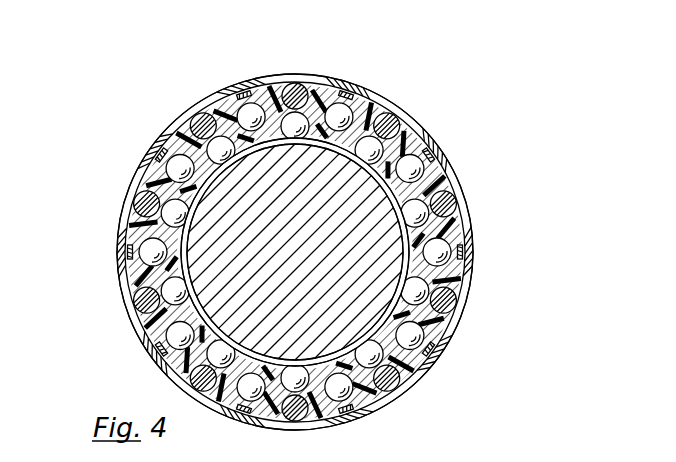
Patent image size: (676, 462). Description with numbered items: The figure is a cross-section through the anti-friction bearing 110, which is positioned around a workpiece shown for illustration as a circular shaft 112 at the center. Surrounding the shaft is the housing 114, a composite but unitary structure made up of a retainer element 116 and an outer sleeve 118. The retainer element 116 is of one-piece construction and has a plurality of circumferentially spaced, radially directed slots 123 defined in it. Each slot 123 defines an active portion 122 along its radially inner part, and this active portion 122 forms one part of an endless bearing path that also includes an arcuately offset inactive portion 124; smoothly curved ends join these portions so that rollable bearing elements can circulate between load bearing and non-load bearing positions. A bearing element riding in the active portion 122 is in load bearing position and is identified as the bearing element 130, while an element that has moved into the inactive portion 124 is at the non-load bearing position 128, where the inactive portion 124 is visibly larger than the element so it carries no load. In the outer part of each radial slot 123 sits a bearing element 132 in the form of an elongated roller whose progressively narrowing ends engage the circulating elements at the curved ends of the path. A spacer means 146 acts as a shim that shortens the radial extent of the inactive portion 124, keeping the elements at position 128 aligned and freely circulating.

The anti-friction bearing 110 is at (530, 164).
The circular shaft 112 is at (319, 259).
The housing 114 is at (128, 327).
The retainer element 116 is at (458, 278).
The outer sleeve 118 is at (443, 350).
The active portion 122 is at (297, 142).
The radially directed slots 123 is at (314, 92).
The inactive portion 124 is at (248, 88).
The non-load bearing position 128 is at (222, 104).
The bearing element in load bearing position 130 is at (284, 140).
The bearing element 132 is at (296, 83).
The spacer means 146 is at (366, 88).